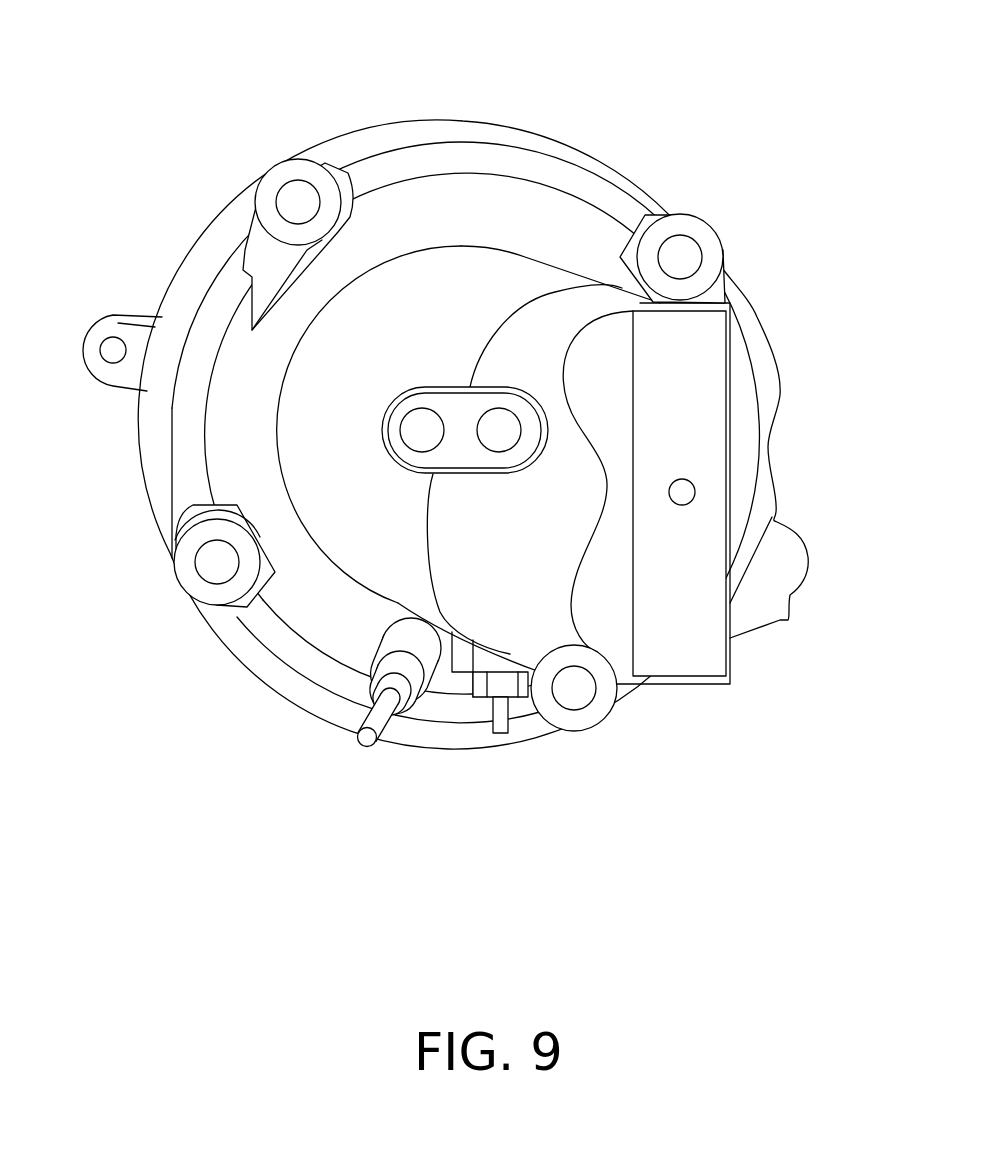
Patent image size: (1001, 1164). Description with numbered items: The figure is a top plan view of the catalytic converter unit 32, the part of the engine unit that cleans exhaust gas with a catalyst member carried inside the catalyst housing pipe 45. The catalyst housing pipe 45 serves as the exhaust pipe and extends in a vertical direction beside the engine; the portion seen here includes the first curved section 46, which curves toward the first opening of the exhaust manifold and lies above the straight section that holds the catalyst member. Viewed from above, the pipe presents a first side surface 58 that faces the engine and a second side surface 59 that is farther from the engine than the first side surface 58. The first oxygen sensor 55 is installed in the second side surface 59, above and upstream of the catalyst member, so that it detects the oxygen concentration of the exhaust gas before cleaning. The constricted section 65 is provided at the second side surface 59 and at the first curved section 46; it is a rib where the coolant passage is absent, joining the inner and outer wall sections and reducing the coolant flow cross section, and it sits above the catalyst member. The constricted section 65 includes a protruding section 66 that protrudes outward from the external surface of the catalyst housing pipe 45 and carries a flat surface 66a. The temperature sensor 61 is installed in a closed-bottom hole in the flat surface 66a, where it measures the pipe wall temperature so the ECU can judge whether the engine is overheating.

The catalytic converter unit 32 is at (167, 140).
The catalyst housing pipe 45 is at (418, 213).
The first curved section 46 is at (552, 333).
The first side surface 58 is at (570, 263).
The second side surface 59 is at (372, 600).
The first oxygen sensor 55 is at (382, 723).
The constricted section 65 is at (455, 683).
The protruding section 66 is at (498, 662).
The flat surface 66a is at (480, 677).
The temperature sensor 61 is at (500, 727).